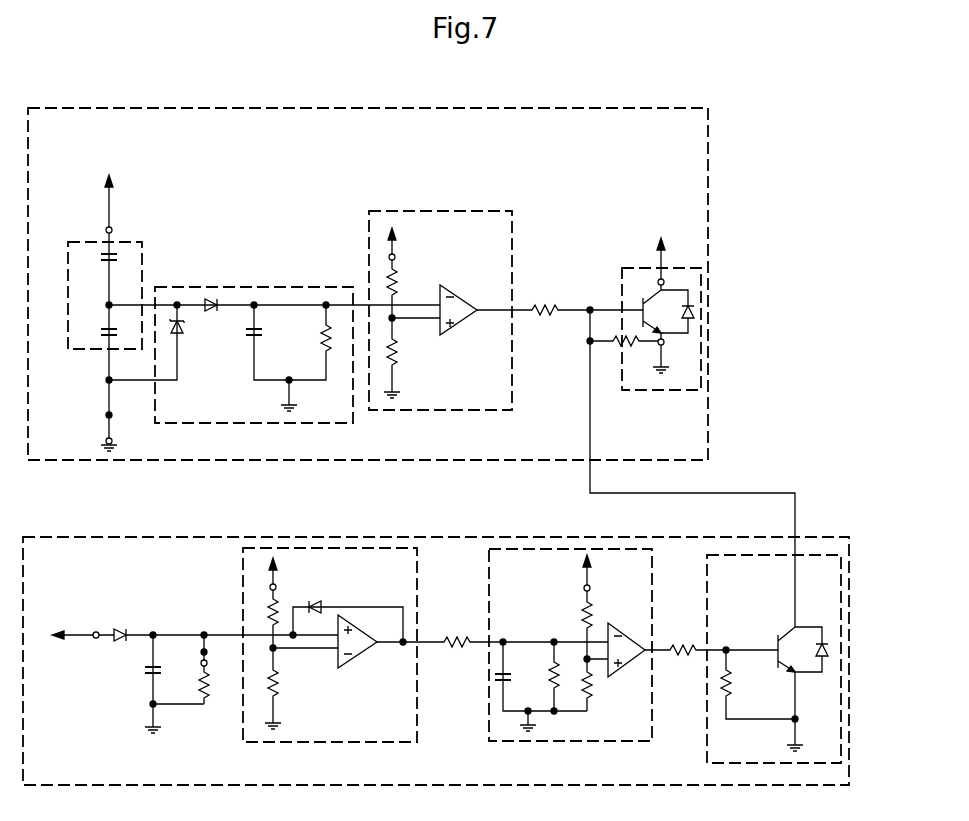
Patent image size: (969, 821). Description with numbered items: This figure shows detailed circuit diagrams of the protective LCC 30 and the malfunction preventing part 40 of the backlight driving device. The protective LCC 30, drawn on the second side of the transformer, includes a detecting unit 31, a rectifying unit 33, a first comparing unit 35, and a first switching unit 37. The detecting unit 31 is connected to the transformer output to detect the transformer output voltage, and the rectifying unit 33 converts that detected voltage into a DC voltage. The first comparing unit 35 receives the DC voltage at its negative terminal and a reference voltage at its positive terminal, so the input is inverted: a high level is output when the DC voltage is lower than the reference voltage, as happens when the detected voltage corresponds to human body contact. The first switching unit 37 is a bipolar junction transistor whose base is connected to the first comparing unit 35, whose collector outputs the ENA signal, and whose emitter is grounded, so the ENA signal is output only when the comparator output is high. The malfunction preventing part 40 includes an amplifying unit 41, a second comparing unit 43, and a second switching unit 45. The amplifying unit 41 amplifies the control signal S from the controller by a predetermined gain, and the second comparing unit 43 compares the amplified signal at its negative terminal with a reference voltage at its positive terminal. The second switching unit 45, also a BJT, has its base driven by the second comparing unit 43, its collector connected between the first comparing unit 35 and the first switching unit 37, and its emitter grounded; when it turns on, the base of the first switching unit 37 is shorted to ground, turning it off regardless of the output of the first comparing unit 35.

The protective LCC 30 is at (709, 302).
The detecting unit 31 is at (134, 225).
The rectifying unit 33 is at (250, 286).
The first comparing unit 35 is at (433, 210).
The first switching unit 37 is at (635, 267).
The malfunction preventing part 40 is at (849, 660).
The amplifying unit 41 is at (333, 547).
The second comparing unit 43 is at (520, 548).
The second switching unit 45 is at (743, 554).